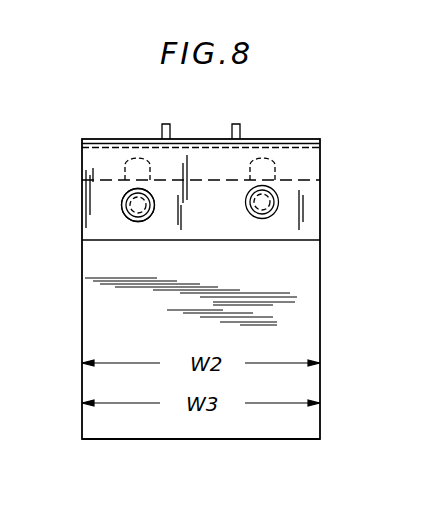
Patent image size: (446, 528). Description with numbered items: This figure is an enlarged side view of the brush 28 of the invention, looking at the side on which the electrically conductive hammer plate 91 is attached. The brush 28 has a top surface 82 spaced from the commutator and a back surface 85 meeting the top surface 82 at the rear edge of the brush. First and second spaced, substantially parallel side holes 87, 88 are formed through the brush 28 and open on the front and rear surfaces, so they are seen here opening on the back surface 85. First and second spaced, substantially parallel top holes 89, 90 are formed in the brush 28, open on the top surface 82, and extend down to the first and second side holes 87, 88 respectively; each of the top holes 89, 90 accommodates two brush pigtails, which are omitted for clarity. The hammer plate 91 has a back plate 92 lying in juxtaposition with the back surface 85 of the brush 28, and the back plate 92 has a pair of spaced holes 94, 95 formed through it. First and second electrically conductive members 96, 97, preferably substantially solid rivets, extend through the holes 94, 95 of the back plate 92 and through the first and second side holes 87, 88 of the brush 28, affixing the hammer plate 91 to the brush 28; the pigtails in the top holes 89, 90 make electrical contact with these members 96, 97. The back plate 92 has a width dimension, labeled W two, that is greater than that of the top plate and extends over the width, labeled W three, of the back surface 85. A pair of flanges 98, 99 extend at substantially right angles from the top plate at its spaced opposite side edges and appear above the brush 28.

The top surface 82 is at (86, 137).
The first top hole 89 is at (130, 157).
The flange 98 is at (171, 108).
The flange 99 is at (247, 108).
The second top hole 90 is at (264, 153).
The second electrically conductive member 97 is at (275, 180).
The second side hole 88 is at (279, 193).
The hole 95 is at (291, 214).
The back plate 92 is at (237, 228).
The first side hole 87 is at (122, 203).
The hole 94 is at (124, 216).
The first electrically conductive member 96 is at (143, 222).
The hammer plate 91 is at (182, 229).
The back surface 85 is at (162, 343).
The brush 28 is at (303, 313).